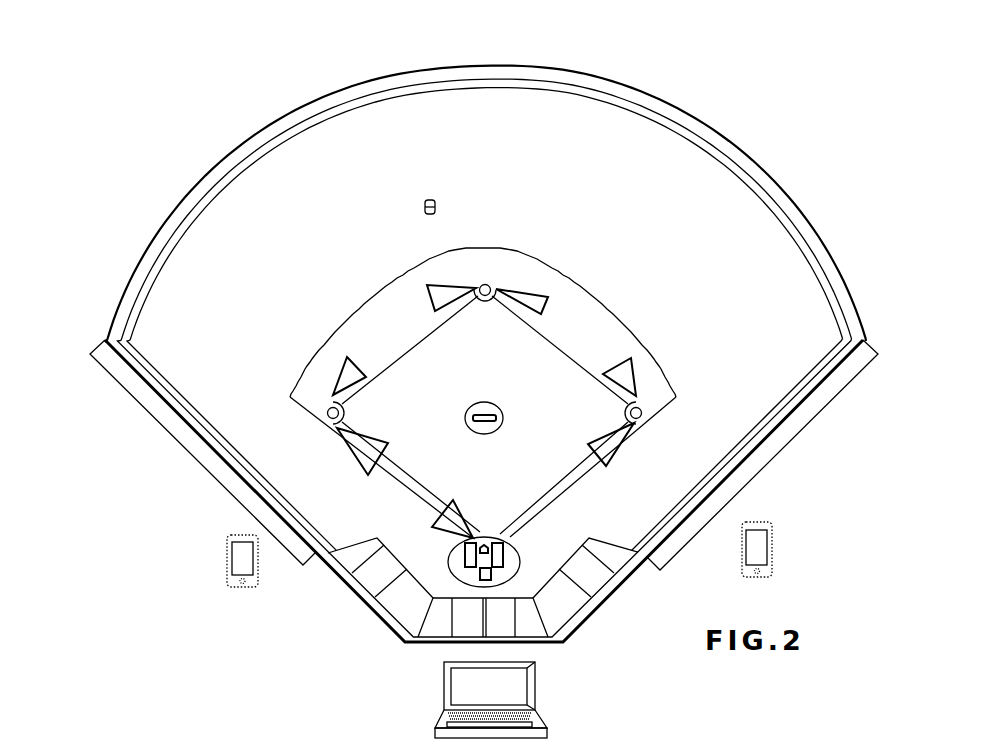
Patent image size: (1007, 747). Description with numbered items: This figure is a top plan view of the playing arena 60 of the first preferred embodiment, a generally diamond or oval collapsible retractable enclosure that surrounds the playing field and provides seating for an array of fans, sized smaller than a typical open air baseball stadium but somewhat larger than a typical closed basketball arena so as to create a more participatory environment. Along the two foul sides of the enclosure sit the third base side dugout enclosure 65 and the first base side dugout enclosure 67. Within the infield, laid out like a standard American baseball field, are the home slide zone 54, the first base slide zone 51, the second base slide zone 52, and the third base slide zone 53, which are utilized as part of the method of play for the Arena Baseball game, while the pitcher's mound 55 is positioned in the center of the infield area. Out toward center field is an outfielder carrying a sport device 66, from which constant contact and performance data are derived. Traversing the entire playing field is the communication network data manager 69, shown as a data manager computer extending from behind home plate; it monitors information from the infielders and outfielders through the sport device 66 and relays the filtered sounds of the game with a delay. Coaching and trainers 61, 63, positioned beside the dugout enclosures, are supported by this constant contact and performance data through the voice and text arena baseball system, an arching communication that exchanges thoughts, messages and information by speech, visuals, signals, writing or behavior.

The playing arena 60 is at (563, 56).
The third base side dugout enclosure 65 is at (84, 353).
The first base side dugout enclosure 67 is at (880, 353).
The sport device 66 is at (424, 208).
The second base slide zone 52 is at (473, 278).
The third base slide zone 53 is at (303, 402).
The first base slide zone 51 is at (643, 402).
The home slide zone 54 is at (477, 525).
The pitcher's mound 55 is at (471, 396).
The coaching and trainers 63 is at (242, 590).
The coaching and trainers 61 is at (757, 579).
The communication network data manager 69 is at (436, 730).